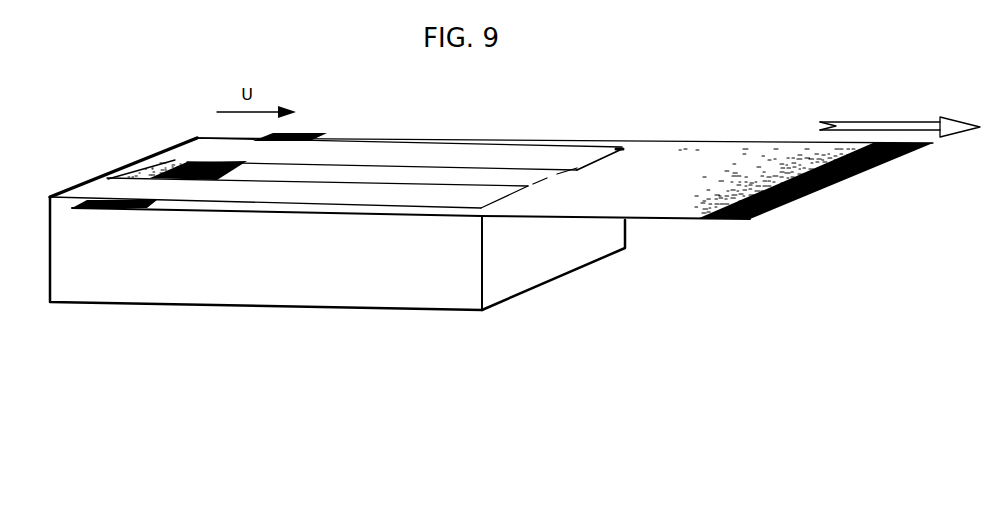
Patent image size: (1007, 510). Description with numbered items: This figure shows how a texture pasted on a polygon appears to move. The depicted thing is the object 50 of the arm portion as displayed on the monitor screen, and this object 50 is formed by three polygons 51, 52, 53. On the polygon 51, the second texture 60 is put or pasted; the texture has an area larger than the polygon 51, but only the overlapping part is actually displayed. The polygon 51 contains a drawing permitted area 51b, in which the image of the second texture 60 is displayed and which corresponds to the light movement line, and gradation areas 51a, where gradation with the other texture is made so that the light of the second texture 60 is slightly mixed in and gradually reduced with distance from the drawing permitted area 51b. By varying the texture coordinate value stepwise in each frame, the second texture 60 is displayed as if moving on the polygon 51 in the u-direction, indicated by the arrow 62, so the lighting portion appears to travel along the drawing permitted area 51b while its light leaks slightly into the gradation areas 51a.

The object 50 is at (337, 267).
The polygon 51 is at (367, 167).
The gradation area 51a is at (468, 193).
The drawing permitted area 51b is at (428, 175).
The polygon 52 is at (542, 270).
The polygon 53 is at (433, 297).
The second texture 60 is at (730, 143).
The transport direction arrow 62 is at (893, 123).